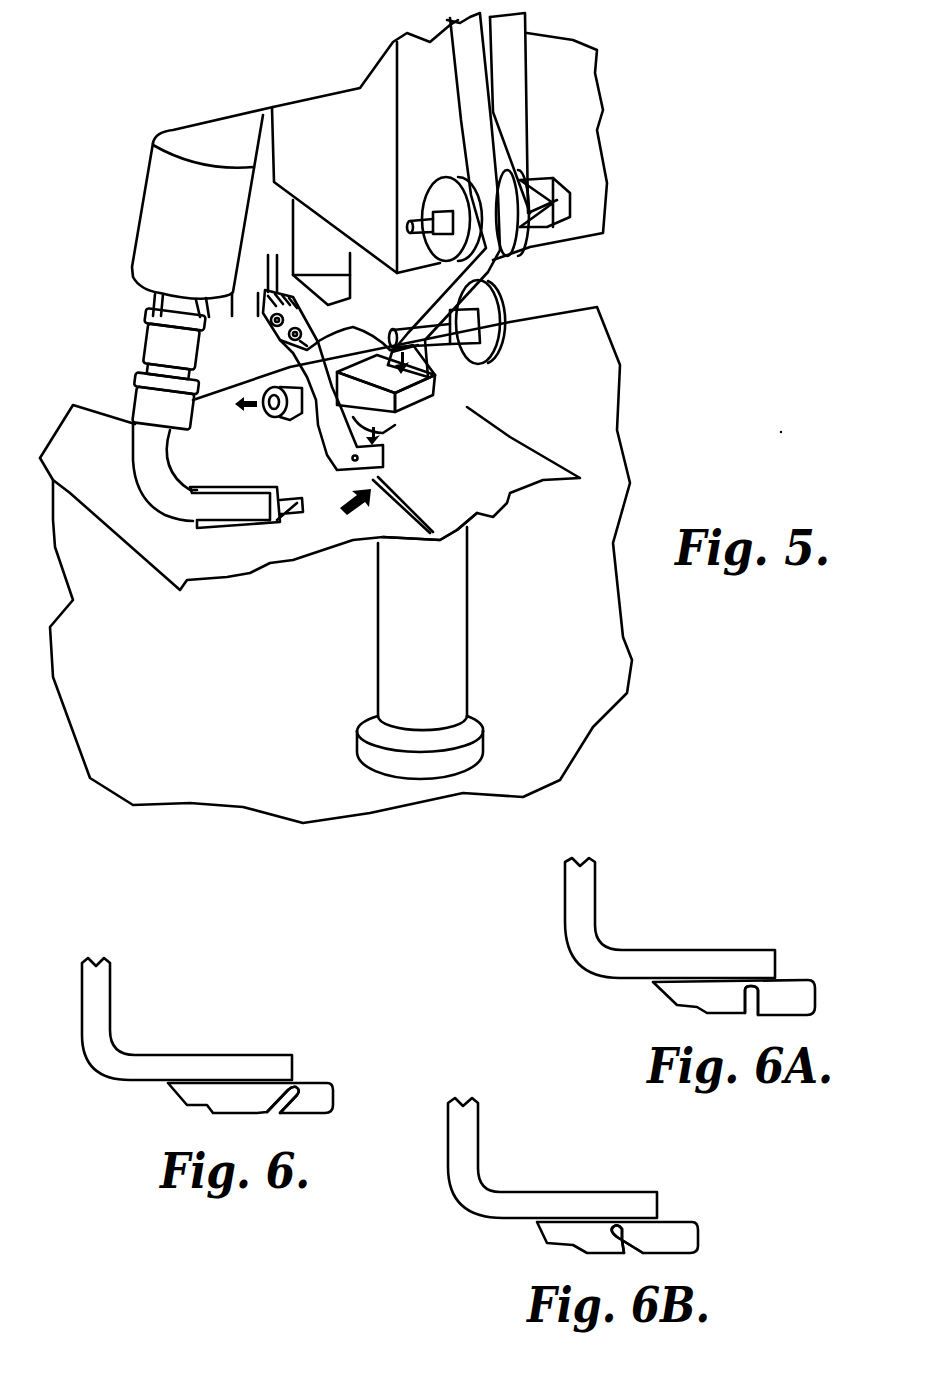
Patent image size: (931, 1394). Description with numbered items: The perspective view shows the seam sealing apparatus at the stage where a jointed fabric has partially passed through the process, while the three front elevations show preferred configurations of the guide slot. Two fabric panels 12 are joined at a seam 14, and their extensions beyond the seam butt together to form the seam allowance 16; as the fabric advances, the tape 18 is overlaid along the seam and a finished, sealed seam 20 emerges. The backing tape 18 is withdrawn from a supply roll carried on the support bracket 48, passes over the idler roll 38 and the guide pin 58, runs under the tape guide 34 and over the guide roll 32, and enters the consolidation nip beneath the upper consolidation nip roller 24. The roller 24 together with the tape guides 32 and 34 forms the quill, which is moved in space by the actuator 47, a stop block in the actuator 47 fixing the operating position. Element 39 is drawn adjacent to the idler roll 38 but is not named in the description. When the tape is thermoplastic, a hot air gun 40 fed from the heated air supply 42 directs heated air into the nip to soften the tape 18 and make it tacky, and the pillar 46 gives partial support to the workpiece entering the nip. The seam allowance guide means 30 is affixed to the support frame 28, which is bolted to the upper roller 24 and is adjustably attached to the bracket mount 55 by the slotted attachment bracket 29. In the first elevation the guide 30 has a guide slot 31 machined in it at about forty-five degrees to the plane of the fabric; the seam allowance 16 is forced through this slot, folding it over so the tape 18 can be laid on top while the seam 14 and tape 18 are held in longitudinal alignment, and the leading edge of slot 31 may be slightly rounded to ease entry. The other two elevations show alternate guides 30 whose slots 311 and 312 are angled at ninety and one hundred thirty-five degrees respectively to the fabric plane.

In FIG. 5, the fabric panel 12 is at (513, 462).
In FIG. 5, the seam 14 is at (382, 572).
In FIG. 5, the seam allowance 16 is at (443, 533).
In FIG. 5, the backing tape 18 is at (463, 60).
In FIG. 5, the sealed seam 20 is at (236, 405).
In FIG. 5, the upper consolidation nip roller 24 is at (393, 443).
In FIG. 5, the support frame 28 is at (207, 337).
In FIG. 6, the support frame 28 is at (98, 1008).
In FIG. 6A, the support frame 28 is at (580, 902).
In FIG. 6B, the support frame 28 is at (468, 1183).
In FIG. 5, the slotted attachment bracket 29 is at (190, 332).
In FIG. 5, the seam allowance guide means 30 is at (383, 513).
In FIG. 6, the seam allowance guide means 30 is at (310, 1102).
In FIG. 6A, the seam allowance guide means 30 is at (792, 997).
In FIG. 6B, the seam allowance guide means 30 is at (677, 1243).
In FIG. 6, the guide slot 31 is at (293, 1095).
In FIG. 6A, the guide slot 311 is at (757, 993).
In FIG. 6B, the guide slot 312 is at (620, 1248).
In FIG. 5, the guide roll 32 is at (390, 402).
In FIG. 5, the tape guide 34 is at (420, 393).
In FIG. 5, the idler roll 38 is at (450, 197).
In FIG. 5, the idler pulley 39 is at (530, 183).
In FIG. 5, the hot air gun 40 is at (273, 520).
In FIG. 5, the heated air supply 42 is at (200, 213).
In FIG. 5, the pillar 46 is at (430, 663).
In FIG. 5, the actuator 47 is at (437, 278).
In FIG. 5, the support bracket 48 is at (517, 90).
In FIG. 5, the bracket mount 55 is at (320, 290).
In FIG. 5, the guide pin 58 is at (430, 357).